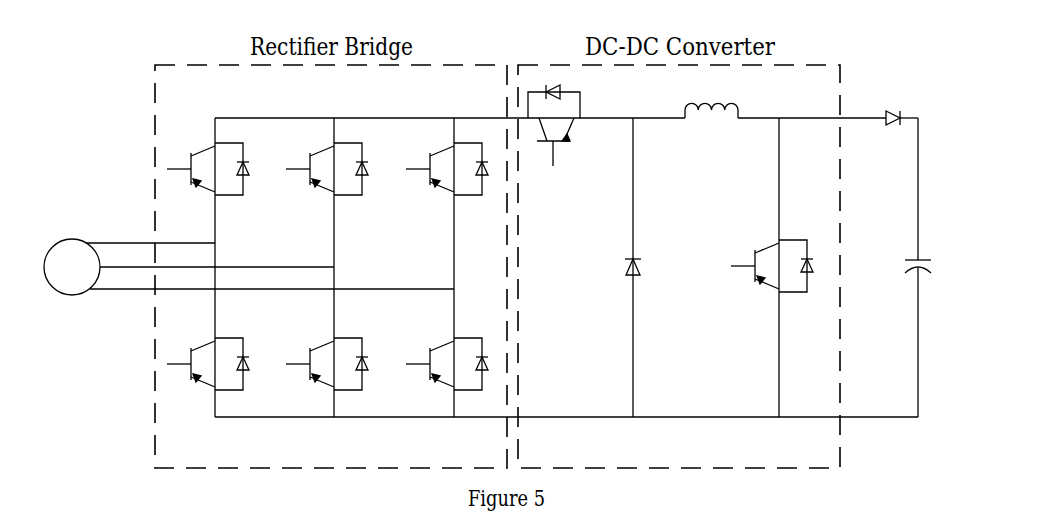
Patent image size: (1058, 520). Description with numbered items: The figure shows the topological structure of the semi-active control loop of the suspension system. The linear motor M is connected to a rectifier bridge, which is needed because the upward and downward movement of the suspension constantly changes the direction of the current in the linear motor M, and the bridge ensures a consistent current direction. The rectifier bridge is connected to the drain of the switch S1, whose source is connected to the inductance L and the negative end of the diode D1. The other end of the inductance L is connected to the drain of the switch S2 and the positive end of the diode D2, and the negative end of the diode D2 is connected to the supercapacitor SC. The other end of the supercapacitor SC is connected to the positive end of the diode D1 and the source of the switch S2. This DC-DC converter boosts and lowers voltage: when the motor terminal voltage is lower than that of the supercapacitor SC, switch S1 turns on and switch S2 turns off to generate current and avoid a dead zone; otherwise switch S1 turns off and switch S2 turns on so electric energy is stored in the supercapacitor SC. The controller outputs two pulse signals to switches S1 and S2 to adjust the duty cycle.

The linear motor M is at (249, 267).
The switch S1 is at (560, 130).
The switch S2 is at (772, 267).
The diode D1 is at (611, 267).
The diode D2 is at (905, 104).
The inductance L is at (711, 128).
The supercapacitor SC is at (933, 267).